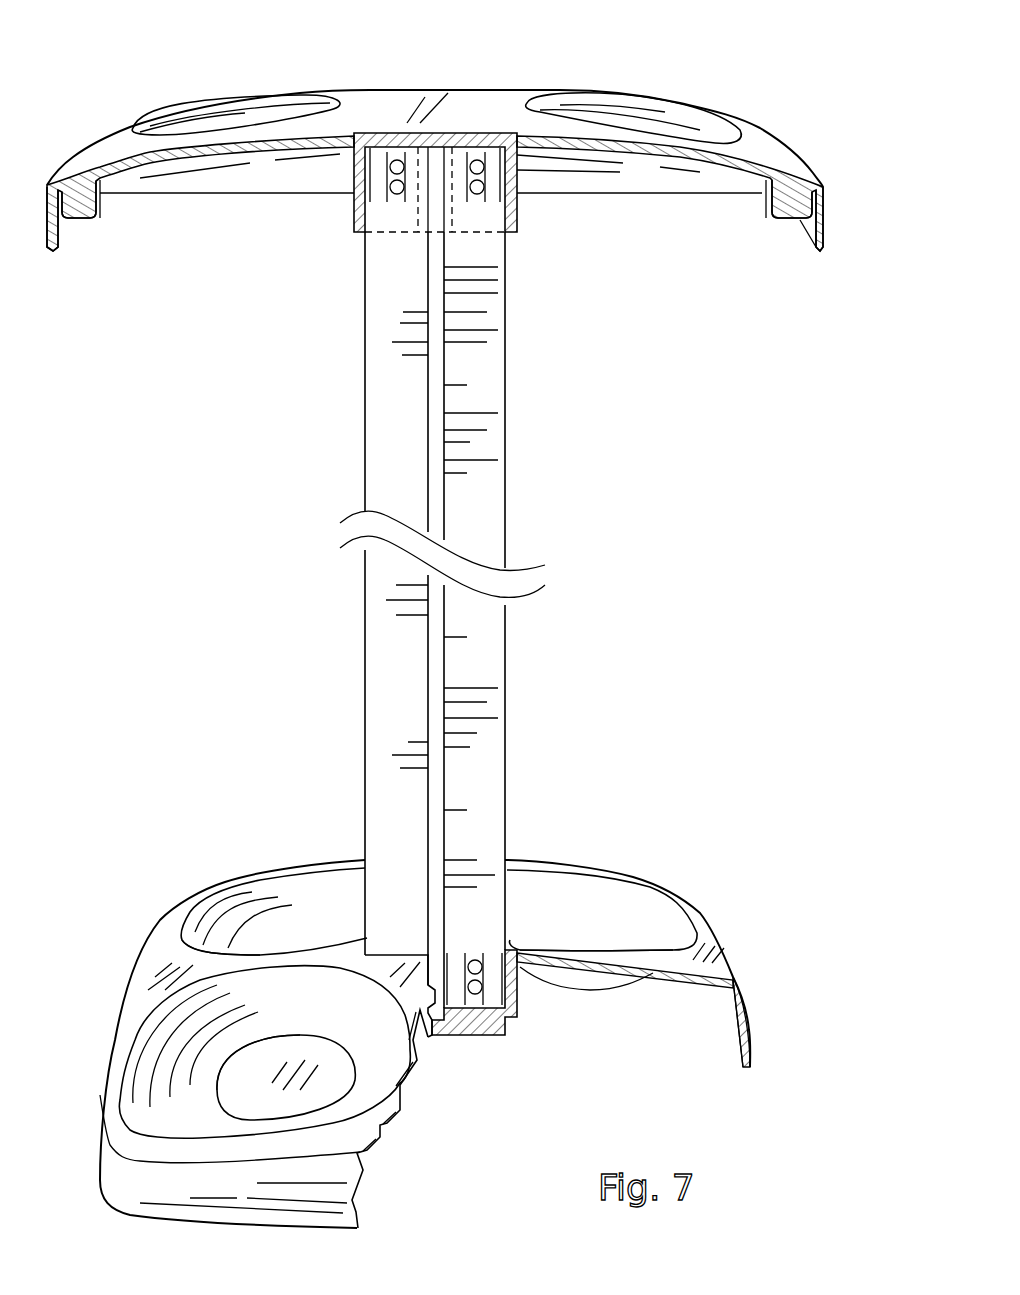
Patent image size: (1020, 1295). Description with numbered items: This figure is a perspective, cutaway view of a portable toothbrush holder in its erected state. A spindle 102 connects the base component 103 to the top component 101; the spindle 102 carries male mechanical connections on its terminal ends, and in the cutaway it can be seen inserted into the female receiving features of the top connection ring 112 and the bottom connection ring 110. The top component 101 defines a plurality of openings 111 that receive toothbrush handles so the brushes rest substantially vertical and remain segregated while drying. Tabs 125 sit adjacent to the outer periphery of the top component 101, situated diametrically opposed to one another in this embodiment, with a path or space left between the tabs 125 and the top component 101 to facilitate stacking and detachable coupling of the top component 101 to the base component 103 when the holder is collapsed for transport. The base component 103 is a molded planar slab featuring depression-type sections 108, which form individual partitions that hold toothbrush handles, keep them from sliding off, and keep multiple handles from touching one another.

The top component 101 is at (488, 103).
The openings 111 is at (228, 125).
The tabs 125 is at (103, 224).
The top connection ring 112 is at (354, 208).
The spindle 102 is at (507, 517).
The base component 103 is at (549, 860).
The depression-type sections 108 is at (303, 947).
The bottom connection ring 110 is at (503, 1040).